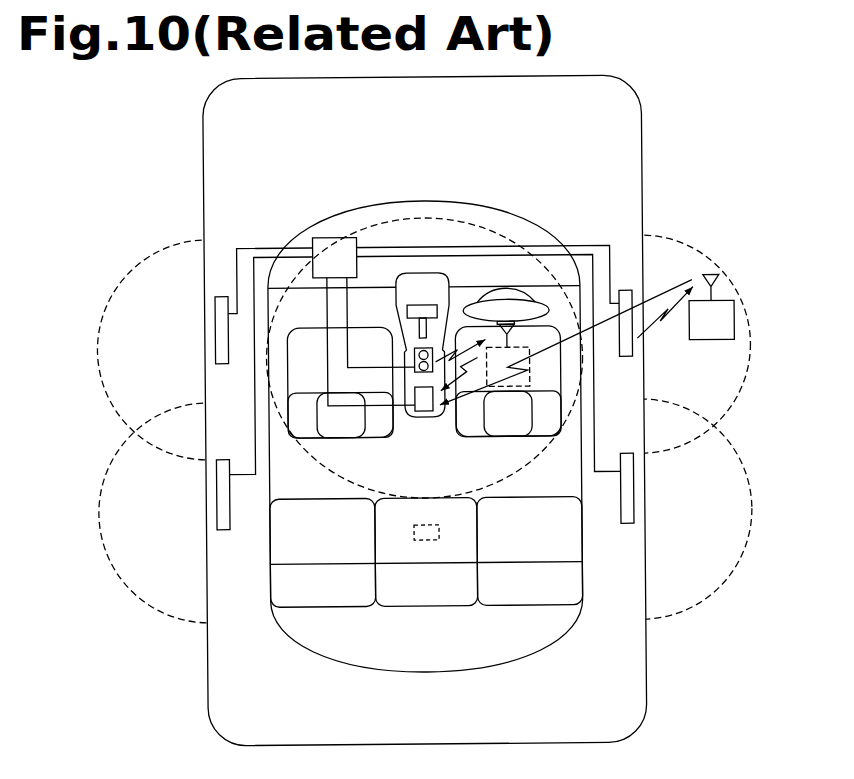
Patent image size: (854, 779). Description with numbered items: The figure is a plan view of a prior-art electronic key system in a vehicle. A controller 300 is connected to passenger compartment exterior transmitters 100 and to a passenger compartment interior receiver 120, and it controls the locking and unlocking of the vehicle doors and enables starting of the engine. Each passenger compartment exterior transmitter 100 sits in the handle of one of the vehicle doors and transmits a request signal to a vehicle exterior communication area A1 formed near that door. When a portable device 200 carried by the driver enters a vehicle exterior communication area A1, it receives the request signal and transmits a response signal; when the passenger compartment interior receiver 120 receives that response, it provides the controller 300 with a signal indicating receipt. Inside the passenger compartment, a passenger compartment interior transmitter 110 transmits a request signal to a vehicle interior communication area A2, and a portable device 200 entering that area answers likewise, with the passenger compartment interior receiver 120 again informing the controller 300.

The passenger compartment exterior transmitter 100 is at (223, 363).
The passenger compartment interior transmitter 110 is at (415, 358).
The passenger compartment interior receiver 120 is at (425, 412).
The portable device 200 is at (736, 321).
The controller 300 is at (340, 237).
The vehicle exterior communication area A1 is at (140, 267).
The vehicle interior communication area A2 is at (432, 220).